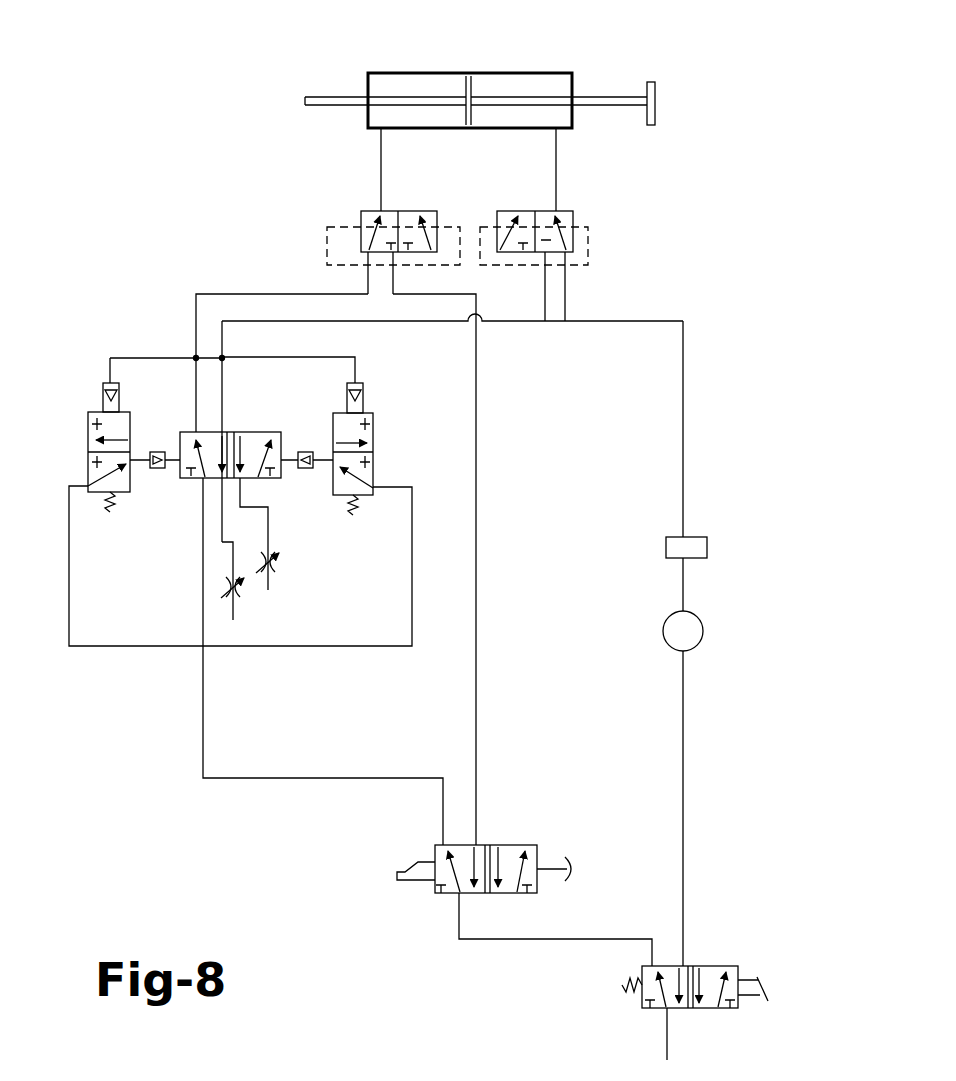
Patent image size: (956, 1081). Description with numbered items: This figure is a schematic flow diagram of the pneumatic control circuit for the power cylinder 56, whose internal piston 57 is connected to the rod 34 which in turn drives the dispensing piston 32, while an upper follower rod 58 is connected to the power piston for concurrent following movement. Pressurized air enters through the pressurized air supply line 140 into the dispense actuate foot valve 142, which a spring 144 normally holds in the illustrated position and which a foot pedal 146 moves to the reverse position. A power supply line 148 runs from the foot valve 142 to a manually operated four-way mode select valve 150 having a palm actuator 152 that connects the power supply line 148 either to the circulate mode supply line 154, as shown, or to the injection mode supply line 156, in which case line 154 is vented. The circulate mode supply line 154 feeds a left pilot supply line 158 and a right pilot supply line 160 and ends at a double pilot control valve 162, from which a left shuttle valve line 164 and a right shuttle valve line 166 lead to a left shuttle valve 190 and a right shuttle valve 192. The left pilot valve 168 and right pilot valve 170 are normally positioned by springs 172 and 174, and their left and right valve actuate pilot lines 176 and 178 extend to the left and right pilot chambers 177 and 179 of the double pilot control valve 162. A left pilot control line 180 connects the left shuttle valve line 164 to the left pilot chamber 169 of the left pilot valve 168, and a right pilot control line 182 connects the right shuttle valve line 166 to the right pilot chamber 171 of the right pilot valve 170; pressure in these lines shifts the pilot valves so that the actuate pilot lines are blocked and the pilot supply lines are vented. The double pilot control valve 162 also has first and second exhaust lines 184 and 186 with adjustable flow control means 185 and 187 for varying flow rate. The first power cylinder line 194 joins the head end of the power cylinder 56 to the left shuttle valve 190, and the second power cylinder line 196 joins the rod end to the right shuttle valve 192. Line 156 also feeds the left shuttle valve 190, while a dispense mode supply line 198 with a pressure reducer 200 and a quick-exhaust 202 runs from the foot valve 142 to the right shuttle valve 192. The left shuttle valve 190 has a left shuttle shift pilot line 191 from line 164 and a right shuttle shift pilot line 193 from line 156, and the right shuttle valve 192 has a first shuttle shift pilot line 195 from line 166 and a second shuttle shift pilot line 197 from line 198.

The power cylinder 56 is at (460, 73).
The internal piston 57 is at (472, 84).
The upper follower rod 58 is at (352, 96).
The rod 34 is at (590, 104).
The dispensing piston 32 is at (655, 114).
The first power cylinder line 194 is at (381, 162).
The second power cylinder line 196 is at (556, 158).
The left shuttle valve 190 is at (361, 214).
The left shuttle shift pilot line 191 is at (327, 248).
The right shuttle valve 192 is at (575, 218).
The right shuttle shift pilot line 193 is at (418, 262).
The first shuttle shift pilot line 195 is at (505, 265).
The second shuttle shift pilot line 197 is at (588, 258).
The left shuttle valve line 164 is at (196, 322).
The right shuttle valve line 166 is at (226, 368).
The injection mode supply line 156 is at (478, 582).
The left pilot control line 180 is at (146, 357).
The right pilot control line 182 is at (335, 357).
The left pilot chamber 169 is at (103, 394).
The left pilot valve 168 is at (88, 452).
The spring 172 is at (112, 508).
The left valve actuate pilot line 176 is at (140, 458).
The left pilot chamber 177 is at (166, 470).
The double pilot control valve 162 is at (246, 434).
The right valve actuate pilot line 178 is at (312, 452).
The right pilot chamber 179 is at (298, 470).
The right pilot chamber 171 is at (363, 396).
The right pilot valve 170 is at (373, 436).
The spring 174 is at (356, 508).
The left pilot supply line 158 is at (90, 648).
The right pilot supply line 160 is at (310, 648).
The first exhaust line 184 is at (222, 540).
The second exhaust line 186 is at (270, 526).
The adjustable flow control means 185 is at (248, 588).
The adjustable flow control means 187 is at (282, 566).
The dispense mode supply line 198 is at (684, 366).
The quick-exhaust 202 is at (707, 547).
The pressure reducer 200 is at (704, 634).
The circulate mode supply line 154 is at (292, 776).
The four-way mode select valve 150 is at (508, 845).
The palm actuator 152 is at (576, 858).
The power supply line 148 is at (548, 939).
The dispense actuate foot valve 142 is at (712, 966).
The spring 144 is at (630, 996).
The foot pedal 146 is at (770, 982).
The pressurized air supply line 140 is at (668, 1040).